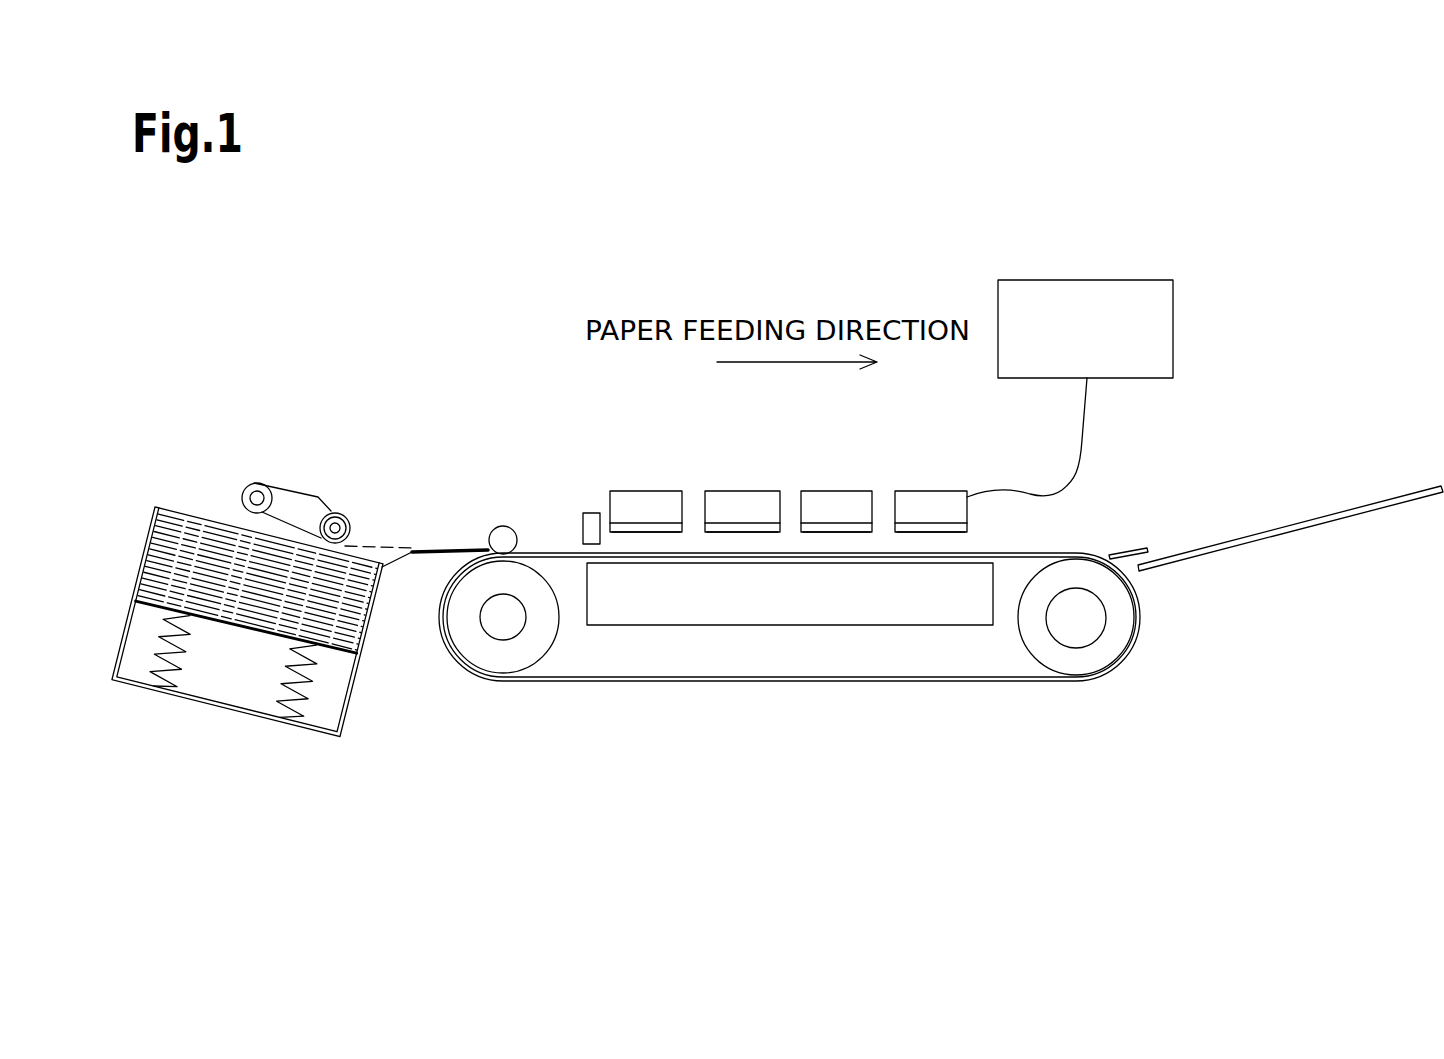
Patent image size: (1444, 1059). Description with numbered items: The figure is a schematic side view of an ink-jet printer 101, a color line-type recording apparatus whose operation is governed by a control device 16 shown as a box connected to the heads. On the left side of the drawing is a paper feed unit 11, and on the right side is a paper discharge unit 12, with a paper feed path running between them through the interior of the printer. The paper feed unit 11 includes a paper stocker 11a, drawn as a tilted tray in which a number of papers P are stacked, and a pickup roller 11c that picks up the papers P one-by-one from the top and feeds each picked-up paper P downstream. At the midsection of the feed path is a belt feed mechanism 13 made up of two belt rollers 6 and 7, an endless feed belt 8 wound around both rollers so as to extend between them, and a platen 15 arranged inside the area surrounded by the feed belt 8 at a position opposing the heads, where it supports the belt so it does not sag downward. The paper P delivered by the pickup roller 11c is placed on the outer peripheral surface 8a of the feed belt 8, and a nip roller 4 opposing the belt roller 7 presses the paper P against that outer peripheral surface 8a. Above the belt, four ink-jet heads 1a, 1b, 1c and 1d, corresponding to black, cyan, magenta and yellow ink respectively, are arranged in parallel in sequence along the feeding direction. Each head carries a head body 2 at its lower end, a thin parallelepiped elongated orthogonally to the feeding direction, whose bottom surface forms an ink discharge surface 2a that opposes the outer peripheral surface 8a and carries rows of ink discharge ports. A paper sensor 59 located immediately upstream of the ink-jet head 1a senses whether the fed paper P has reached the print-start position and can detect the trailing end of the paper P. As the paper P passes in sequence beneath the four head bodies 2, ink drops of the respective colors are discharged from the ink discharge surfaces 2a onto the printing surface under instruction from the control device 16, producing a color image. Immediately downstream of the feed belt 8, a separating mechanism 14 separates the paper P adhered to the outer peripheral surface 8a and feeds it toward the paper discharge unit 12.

The ink-jet printer 101 is at (1223, 390).
The ink-jet head 1a is at (610, 475).
The ink-jet head 1b is at (708, 475).
The ink-jet head 1c is at (840, 465).
The ink-jet head 1d is at (929, 465).
The head body 2 is at (662, 527).
The ink discharge surface 2a is at (647, 534).
The nip roller 4 is at (503, 537).
The belt roller 6 is at (1108, 645).
The belt roller 7 is at (503, 655).
The feed belt 8 is at (562, 677).
The outer peripheral surface 8a is at (528, 683).
The paper feed unit 11 is at (303, 444).
The paper stocker 11a is at (157, 502).
The pickup roller 11c is at (342, 513).
The paper discharge unit 12 is at (1328, 479).
The belt feed mechanism 13 is at (421, 677).
The separating mechanism 14 is at (1132, 550).
The platen 15 is at (668, 600).
The control device 16 is at (1057, 288).
The paper sensor 59 is at (584, 512).
The paper P is at (218, 518).